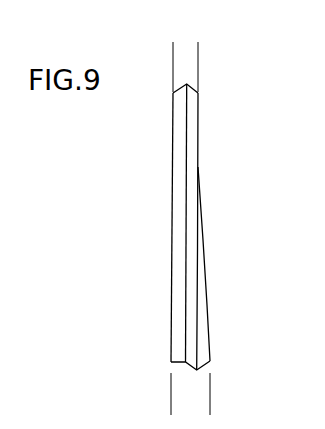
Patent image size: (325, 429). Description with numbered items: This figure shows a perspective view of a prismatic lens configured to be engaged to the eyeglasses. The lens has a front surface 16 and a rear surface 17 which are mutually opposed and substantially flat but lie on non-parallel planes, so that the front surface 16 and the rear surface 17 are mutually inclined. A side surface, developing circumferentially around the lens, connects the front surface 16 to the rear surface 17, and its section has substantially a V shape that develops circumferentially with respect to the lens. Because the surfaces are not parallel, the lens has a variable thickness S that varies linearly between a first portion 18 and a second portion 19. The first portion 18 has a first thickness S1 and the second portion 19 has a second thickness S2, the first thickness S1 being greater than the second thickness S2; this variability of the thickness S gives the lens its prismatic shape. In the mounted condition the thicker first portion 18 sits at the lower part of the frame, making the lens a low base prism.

The front surface 16 is at (173, 255).
The rear surface 17 is at (204, 254).
The first portion 18 is at (152, 340).
The second portion 19 is at (192, 225).
The thickness S is at (150, 212).
The first thickness S1 is at (143, 408).
The second thickness S2 is at (147, 52).